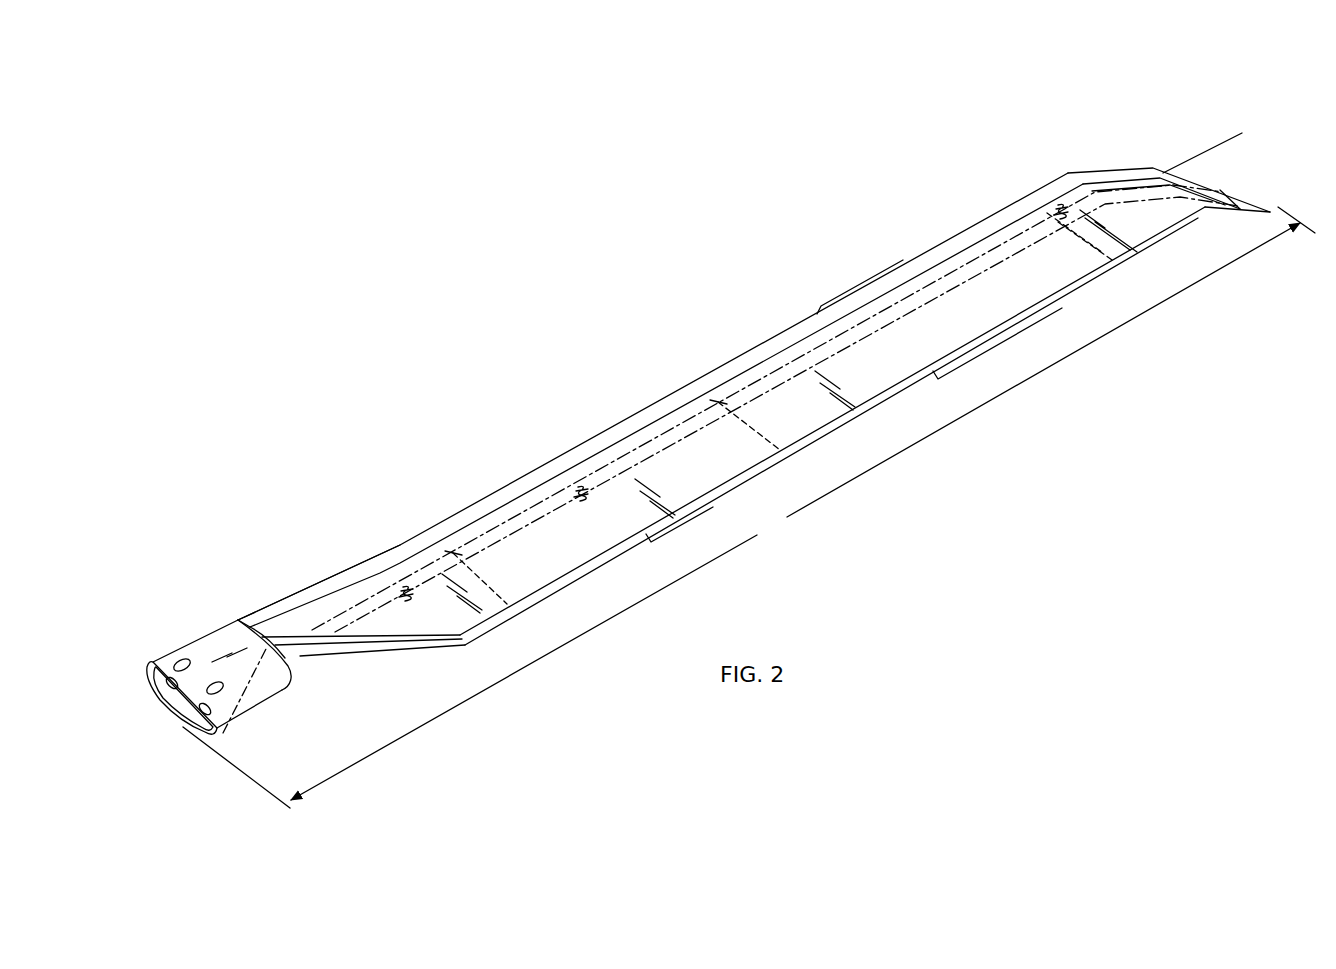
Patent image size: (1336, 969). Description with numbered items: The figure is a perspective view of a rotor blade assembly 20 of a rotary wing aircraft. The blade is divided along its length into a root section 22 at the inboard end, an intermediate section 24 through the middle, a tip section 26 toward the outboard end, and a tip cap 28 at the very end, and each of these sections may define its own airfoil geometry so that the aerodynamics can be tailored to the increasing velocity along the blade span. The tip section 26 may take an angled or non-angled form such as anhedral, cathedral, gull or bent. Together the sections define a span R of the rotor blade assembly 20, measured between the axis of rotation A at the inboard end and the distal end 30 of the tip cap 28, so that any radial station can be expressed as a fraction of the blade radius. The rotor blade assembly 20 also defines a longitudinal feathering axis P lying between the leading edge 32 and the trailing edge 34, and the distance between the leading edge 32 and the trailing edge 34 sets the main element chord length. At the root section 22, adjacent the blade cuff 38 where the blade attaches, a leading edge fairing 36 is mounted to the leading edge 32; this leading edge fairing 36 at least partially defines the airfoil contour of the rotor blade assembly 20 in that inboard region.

The rotor blade assembly 20 is at (670, 298).
The root section 22 is at (283, 594).
The intermediate section 24 is at (665, 392).
The tip section 26 is at (1047, 165).
The tip cap 28 is at (1234, 176).
The distal end 30 is at (1257, 200).
The leading edge 32 is at (783, 337).
The trailing edge 34 is at (840, 413).
The leading edge fairing 36 is at (318, 598).
The blade cuff 38 is at (208, 645).
The axis of rotation A is at (250, 677).
The longitudinal feathering axis P is at (1207, 152).
The span R is at (749, 507).